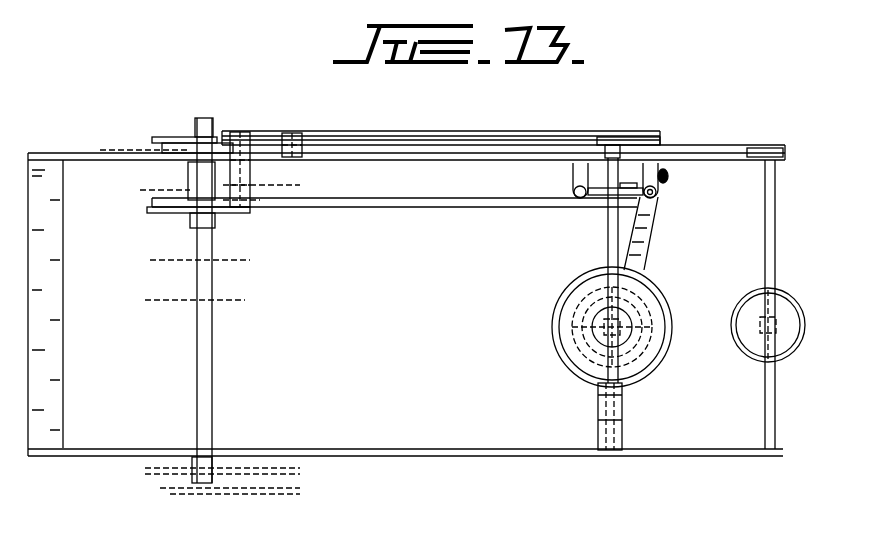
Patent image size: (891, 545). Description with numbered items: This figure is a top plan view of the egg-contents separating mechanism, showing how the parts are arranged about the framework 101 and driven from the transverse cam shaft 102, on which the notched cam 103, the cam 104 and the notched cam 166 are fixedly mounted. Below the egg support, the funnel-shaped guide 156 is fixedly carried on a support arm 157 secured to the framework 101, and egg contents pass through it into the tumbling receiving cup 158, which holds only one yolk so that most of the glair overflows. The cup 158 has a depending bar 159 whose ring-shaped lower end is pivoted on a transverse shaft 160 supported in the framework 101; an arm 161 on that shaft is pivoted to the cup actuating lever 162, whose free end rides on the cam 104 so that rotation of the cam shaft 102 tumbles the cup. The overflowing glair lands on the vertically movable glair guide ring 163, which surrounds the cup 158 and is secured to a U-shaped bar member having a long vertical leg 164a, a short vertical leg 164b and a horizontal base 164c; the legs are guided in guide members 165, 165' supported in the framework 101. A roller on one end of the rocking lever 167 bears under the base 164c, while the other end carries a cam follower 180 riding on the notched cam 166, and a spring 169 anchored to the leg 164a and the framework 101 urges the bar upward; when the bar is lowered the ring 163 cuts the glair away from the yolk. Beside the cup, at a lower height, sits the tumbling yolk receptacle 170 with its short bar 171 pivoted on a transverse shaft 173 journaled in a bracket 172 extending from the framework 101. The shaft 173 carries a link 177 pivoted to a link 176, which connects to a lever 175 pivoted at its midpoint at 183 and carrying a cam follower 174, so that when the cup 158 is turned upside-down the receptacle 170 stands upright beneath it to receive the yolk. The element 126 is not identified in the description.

The framework 101 is at (80, 133).
The cam shaft 102 is at (210, 370).
The notched cam 103 is at (165, 187).
The cam 104 is at (165, 121).
The arm 126 is at (646, 228).
The funnel-shaped guide 156 is at (555, 340).
The support arm 157 is at (597, 411).
The receiving cup 158 is at (667, 357).
The depending bar 159 is at (556, 316).
The transverse shaft 160 is at (606, 222).
The arm 161 is at (626, 137).
The cup actuating lever 162 is at (385, 131).
The glair guide ring 163 is at (725, 298).
The long vertical leg 164a is at (660, 193).
The short vertical leg 164b is at (575, 190).
The horizontal base 164c is at (597, 200).
The guide member 165 is at (675, 146).
The guide member 165' is at (587, 146).
The notched cam 166 is at (243, 213).
The rocking lever 167 is at (326, 208).
The spring 169 is at (668, 170).
The yolk receptacle 170 is at (793, 306).
The short bar 171 is at (776, 325).
The bracket 172 is at (727, 160).
The transverse shaft 173 is at (776, 235).
The cam follower 174 is at (240, 130).
The lever 175 is at (221, 125).
The link 176 is at (465, 131).
The link 177 is at (770, 149).
The cam follower 180 is at (158, 218).
The pivot 183 is at (167, 155).